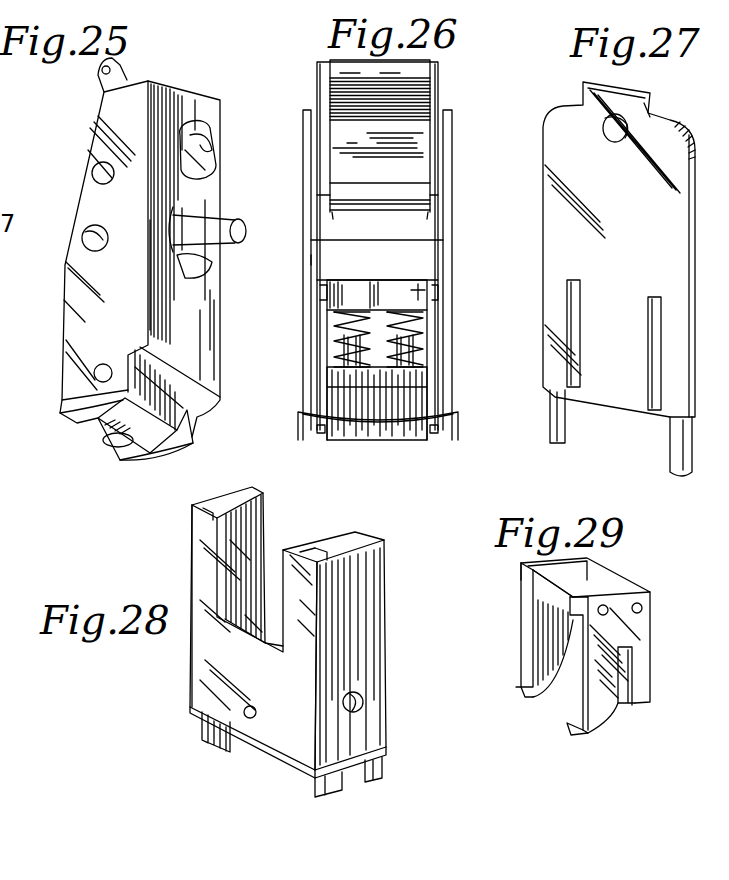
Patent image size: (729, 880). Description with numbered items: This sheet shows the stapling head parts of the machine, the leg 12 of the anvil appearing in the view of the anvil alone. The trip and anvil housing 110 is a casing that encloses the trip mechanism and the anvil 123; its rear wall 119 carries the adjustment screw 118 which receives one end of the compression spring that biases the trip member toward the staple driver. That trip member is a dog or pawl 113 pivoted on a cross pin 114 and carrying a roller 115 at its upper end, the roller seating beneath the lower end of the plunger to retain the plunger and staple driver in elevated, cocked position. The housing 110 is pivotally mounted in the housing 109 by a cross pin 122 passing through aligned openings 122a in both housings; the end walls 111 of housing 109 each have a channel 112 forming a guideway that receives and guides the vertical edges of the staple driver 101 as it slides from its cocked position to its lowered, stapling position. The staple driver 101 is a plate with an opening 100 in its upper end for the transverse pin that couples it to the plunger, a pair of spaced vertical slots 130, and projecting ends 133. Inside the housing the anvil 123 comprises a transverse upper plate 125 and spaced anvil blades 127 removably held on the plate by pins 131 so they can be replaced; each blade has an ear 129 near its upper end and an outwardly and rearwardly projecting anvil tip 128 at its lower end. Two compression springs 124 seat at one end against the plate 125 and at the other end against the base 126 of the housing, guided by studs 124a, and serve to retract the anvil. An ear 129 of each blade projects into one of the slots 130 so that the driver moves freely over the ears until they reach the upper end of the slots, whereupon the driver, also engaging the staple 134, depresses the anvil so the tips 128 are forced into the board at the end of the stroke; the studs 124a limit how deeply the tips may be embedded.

In FIG. 29, the leg 12 is at (543, 627).
In FIG. 27, the opening 100 is at (615, 128).
In FIG. 27, the staple driver 101 is at (640, 208).
In FIG. 28, the housing 109 is at (188, 661).
In FIG. 25, the trip and anvil housing 110 is at (225, 193).
In FIG. 26, the trip and anvil housing 110 is at (452, 200).
In FIG. 28, the end walls 111 is at (247, 513).
In FIG. 28, the channel 112 is at (265, 478).
In FIG. 26, the dog or pawl 113 is at (437, 88).
In FIG. 25, the cross pin 114 is at (98, 173).
In FIG. 26, the cross pin 114 is at (410, 190).
In FIG. 25, the roller 115 is at (127, 78).
In FIG. 26, the roller 115 is at (352, 62).
In FIG. 25, the adjustment screw 118 is at (200, 122).
In FIG. 25, the rear wall 119 is at (200, 320).
In FIG. 26, the cross pin 122 is at (450, 246).
In FIG. 25, the aligned openings 122a is at (72, 255).
In FIG. 28, the aligned openings 122a is at (363, 702).
In FIG. 26, the anvil 123 is at (433, 297).
In FIG. 29, the anvil 123 is at (653, 604).
In FIG. 26, the compression springs 124 is at (417, 327).
In FIG. 26, the studs 124a is at (417, 347).
In FIG. 26, the upper plate 125 is at (443, 262).
In FIG. 29, the upper plate 125 is at (585, 577).
In FIG. 26, the base 126 is at (407, 373).
In FIG. 25, the anvil blades 127 is at (180, 437).
In FIG. 26, the anvil blades 127 is at (437, 355).
In FIG. 29, the anvil blades 127 is at (633, 627).
In FIG. 26, the anvil tip 128 is at (318, 430).
In FIG. 29, the anvil tip 128 is at (575, 730).
In FIG. 26, the ear 129 is at (320, 292).
In FIG. 29, the ear 129 is at (570, 600).
In FIG. 27, the vertical slots 130 is at (673, 340).
In FIG. 29, the pins 131 is at (608, 615).
In FIG. 27, the projecting ends 133 is at (667, 450).
In FIG. 26, the staple 134 is at (457, 412).